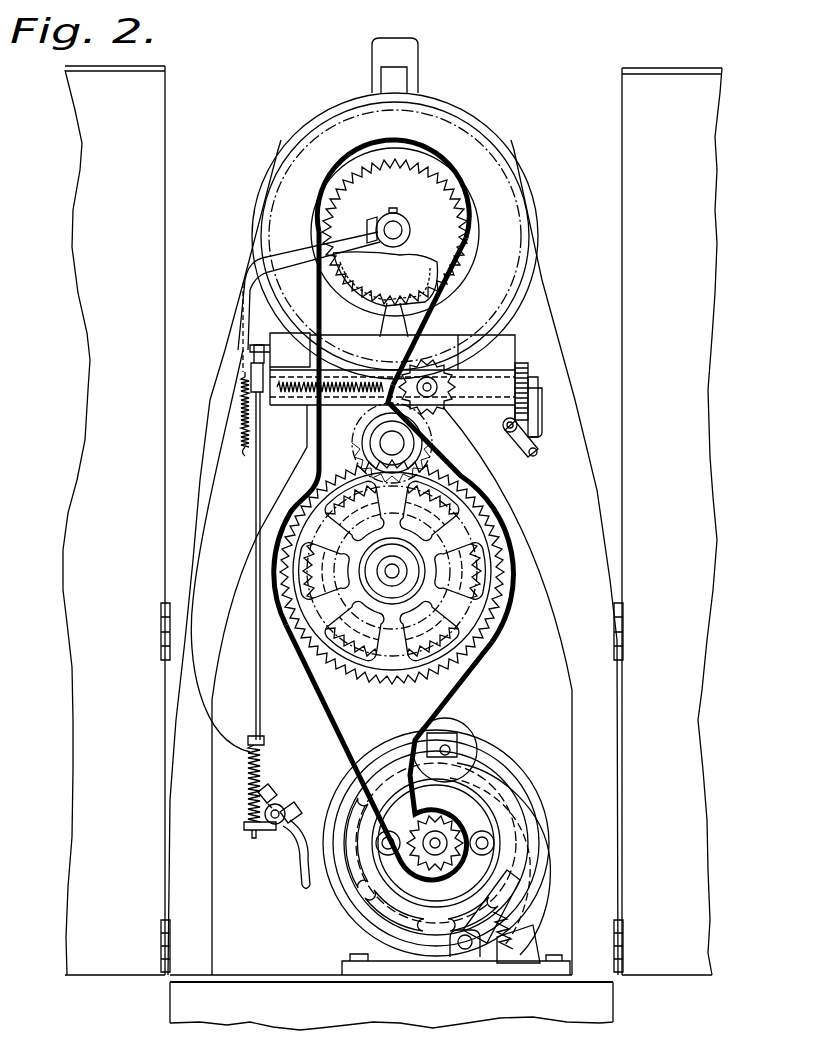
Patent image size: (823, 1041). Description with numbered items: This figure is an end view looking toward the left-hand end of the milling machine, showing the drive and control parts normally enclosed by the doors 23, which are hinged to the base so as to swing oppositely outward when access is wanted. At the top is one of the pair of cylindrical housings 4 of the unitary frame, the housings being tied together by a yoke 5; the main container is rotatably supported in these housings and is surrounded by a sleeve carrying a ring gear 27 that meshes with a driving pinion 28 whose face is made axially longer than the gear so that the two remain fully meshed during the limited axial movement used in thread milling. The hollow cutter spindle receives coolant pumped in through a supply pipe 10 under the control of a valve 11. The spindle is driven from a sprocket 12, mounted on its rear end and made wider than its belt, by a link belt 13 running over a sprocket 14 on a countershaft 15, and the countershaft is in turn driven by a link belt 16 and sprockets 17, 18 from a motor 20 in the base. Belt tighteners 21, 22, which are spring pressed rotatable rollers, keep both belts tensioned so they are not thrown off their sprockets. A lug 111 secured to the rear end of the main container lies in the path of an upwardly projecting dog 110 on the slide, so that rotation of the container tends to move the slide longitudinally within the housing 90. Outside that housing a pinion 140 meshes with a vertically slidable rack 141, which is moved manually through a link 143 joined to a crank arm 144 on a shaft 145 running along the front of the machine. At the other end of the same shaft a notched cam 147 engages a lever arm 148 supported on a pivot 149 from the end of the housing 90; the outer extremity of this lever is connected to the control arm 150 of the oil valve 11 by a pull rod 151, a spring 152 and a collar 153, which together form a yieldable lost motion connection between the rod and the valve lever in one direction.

The housing 4 is at (522, 272).
The yoke 5 is at (388, 28).
The supply pipe 10 is at (203, 512).
The valve 11 is at (272, 838).
The sprocket 12 is at (395, 232).
The link belt 13 is at (440, 308).
The sprocket 14 is at (392, 556).
The countershaft 15 is at (400, 652).
The link belt 16 is at (308, 696).
The sprocket 17 is at (404, 684).
The sprocket 18 is at (423, 817).
The motor 20 is at (526, 782).
The belt tightener 21 is at (443, 366).
The belt tightener 22 is at (467, 732).
The door 23 is at (392, 548).
The ring gear 27 is at (503, 173).
The driving pinion 28 is at (362, 363).
The housing 90 is at (503, 336).
The dog 110 is at (380, 333).
The lug 111 is at (368, 316).
The pinion 140 is at (526, 372).
The rack 141 is at (531, 400).
The link 143 is at (541, 430).
The crank arm 144 is at (528, 458).
The shaft 145 is at (508, 432).
The notched cam 147 is at (258, 414).
The lever arm 148 is at (257, 345).
The pivot 149 is at (250, 348).
The control arm 150 is at (244, 830).
The pull rod 151 is at (261, 684).
The spring 152 is at (266, 762).
The collar 153 is at (265, 739).